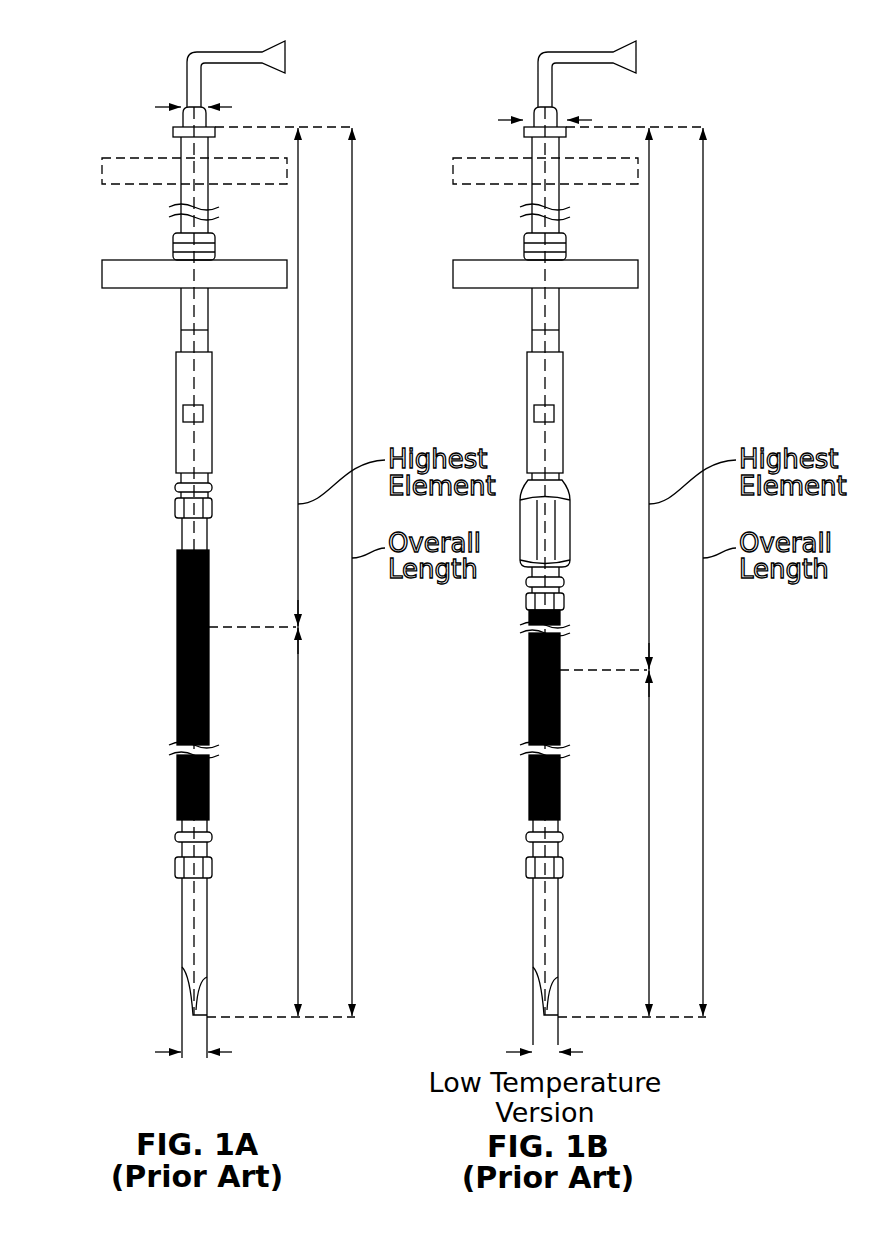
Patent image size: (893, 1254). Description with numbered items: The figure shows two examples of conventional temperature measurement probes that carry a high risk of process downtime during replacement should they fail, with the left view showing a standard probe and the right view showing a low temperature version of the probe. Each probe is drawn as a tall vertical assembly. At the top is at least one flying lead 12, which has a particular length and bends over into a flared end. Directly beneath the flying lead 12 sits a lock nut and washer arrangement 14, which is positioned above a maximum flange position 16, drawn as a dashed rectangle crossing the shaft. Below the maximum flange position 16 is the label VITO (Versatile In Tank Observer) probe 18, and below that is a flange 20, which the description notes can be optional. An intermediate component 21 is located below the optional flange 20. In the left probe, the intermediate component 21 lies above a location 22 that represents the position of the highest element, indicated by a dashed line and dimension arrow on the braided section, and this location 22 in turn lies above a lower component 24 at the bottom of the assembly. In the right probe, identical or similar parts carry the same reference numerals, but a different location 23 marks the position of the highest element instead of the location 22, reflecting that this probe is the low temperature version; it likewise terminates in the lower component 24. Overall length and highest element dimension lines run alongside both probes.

In FIG. 1A, the flying lead 12 is at (184, 82).
In FIG. 1B, the flying lead 12 is at (552, 74).
In FIG. 1A, the lock nut and washer arrangement 14 is at (171, 132).
In FIG. 1B, the lock nut and washer arrangement 14 is at (507, 116).
In FIG. 1A, the maximum flange position 16 is at (100, 168).
In FIG. 1B, the maximum flange position 16 is at (509, 161).
In FIG. 1A, the label VITO probe 18 is at (171, 246).
In FIG. 1B, the label VITO probe 18 is at (510, 237).
In FIG. 1A, the flange 20 is at (100, 269).
In FIG. 1B, the flange 20 is at (508, 263).
In FIG. 1A, the intermediate component 21 is at (172, 404).
In FIG. 1B, the intermediate component 21 is at (508, 412).
In FIG. 1A, the location 22 is at (173, 627).
In FIG. 1B, the location 23 is at (512, 715).
In FIG. 1A, the lower component 24 is at (173, 923).
In FIG. 1B, the lower component 24 is at (506, 961).